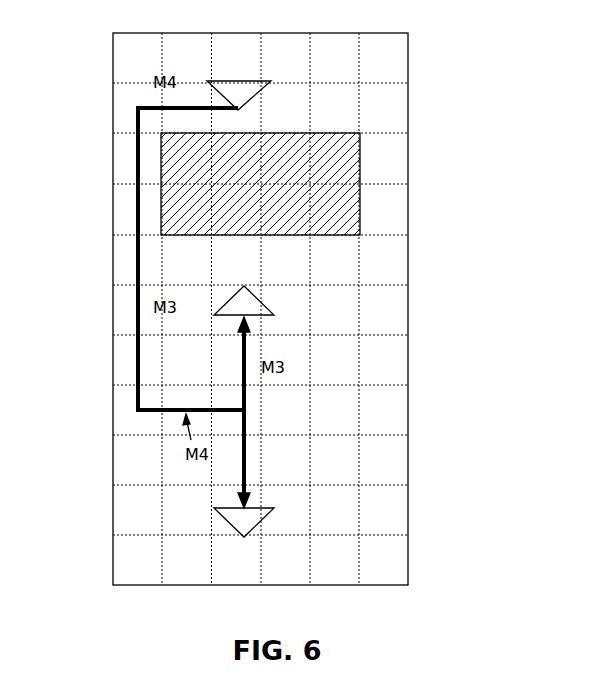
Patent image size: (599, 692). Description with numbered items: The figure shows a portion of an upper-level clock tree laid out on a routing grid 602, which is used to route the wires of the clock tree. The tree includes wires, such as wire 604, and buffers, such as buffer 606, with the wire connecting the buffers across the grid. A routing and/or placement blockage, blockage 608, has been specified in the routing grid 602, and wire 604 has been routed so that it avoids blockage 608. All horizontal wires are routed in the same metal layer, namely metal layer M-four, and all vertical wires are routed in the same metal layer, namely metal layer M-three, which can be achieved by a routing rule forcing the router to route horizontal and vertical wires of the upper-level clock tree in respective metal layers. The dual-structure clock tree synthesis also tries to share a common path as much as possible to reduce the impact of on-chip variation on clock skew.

The routing grid 602 is at (409, 543).
The wire 604 is at (136, 268).
The buffer 606 is at (228, 523).
The blockage 608 is at (362, 160).